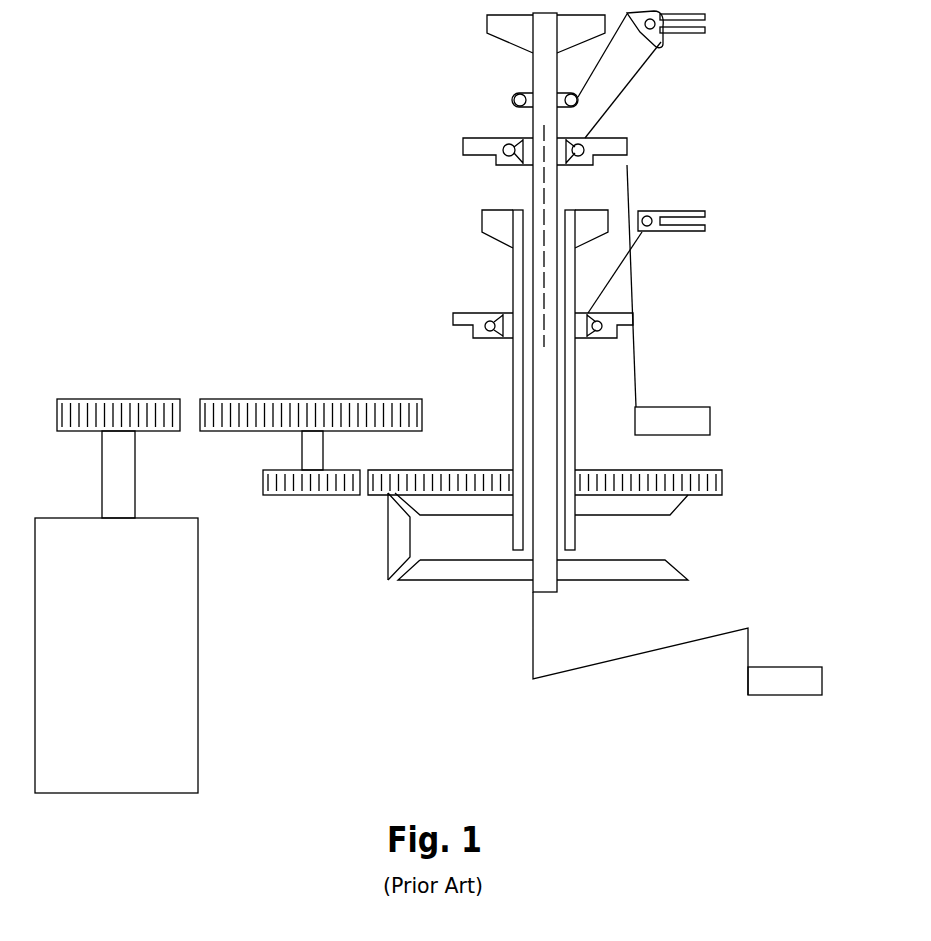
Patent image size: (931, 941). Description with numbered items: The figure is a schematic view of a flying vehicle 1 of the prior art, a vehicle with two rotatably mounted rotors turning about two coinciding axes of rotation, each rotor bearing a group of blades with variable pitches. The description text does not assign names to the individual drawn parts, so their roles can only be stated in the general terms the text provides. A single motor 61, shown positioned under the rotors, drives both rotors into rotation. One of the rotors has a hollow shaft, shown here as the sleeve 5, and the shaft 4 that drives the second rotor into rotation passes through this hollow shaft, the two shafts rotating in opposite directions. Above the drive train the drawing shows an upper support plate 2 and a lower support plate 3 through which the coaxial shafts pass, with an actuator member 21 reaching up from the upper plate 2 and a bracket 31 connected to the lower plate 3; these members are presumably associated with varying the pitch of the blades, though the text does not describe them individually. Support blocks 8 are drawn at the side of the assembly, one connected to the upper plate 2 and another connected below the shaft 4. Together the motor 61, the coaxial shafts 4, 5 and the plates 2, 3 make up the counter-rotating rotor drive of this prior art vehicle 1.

The prior art knitting/winding machine assembly 1 is at (314, 128).
The upper support plate 2 is at (617, 146).
The actuator cylinder 21 is at (705, 30).
The lower support plate 3 is at (633, 318).
The bracket 31 is at (688, 231).
The main shaft 4 is at (543, 188).
The sleeve tube 5 is at (543, 328).
The support block 8 is at (693, 421).
The motor 61 is at (116, 612).